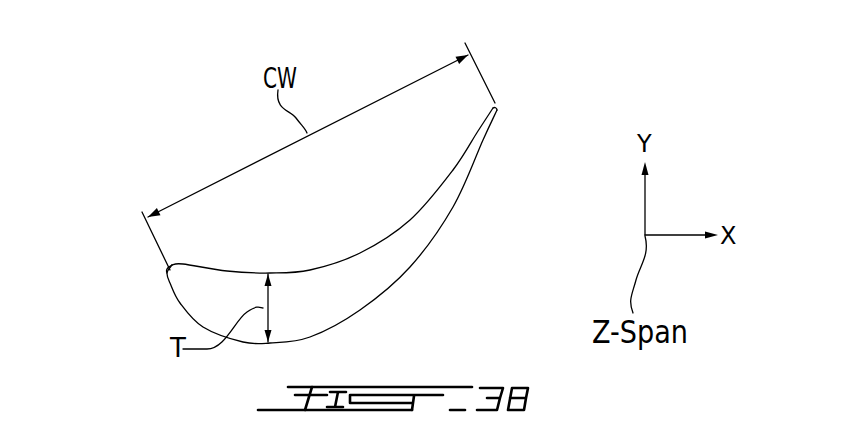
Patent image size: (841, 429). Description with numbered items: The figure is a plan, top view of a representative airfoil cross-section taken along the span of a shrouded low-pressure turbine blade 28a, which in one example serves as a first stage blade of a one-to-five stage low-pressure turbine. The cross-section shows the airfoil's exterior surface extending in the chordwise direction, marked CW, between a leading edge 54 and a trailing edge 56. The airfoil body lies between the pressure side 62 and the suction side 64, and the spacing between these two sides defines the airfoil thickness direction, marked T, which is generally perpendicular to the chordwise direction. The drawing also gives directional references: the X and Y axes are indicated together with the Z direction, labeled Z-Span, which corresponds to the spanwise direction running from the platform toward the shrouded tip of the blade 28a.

The first stage LP turbine blade 28a is at (313, 190).
The leading edge 54 is at (170, 268).
The trailing edge 56 is at (498, 103).
The pressure side 62 is at (330, 253).
The suction side 64 is at (372, 313).